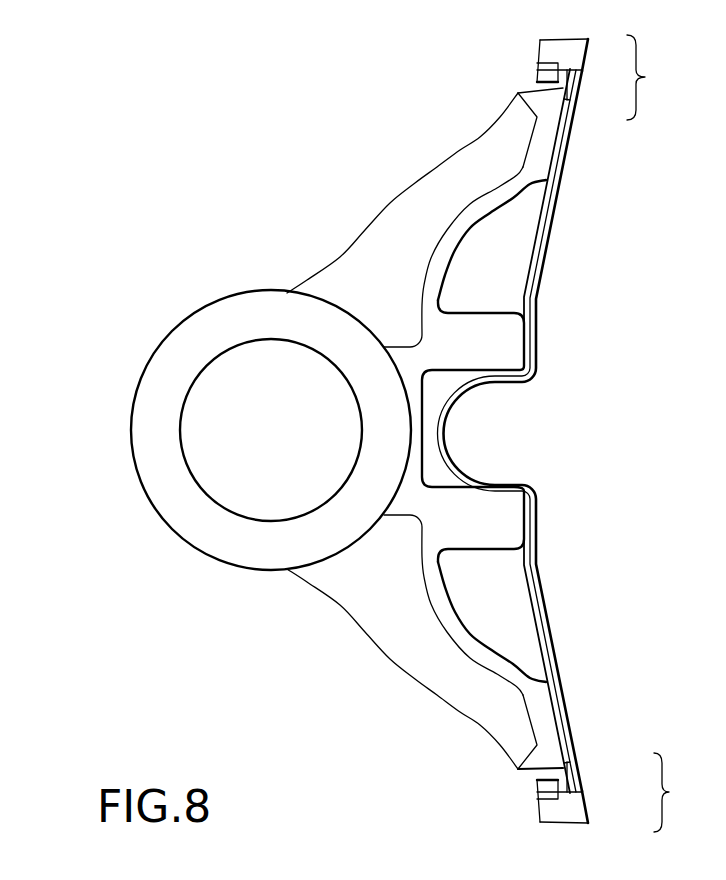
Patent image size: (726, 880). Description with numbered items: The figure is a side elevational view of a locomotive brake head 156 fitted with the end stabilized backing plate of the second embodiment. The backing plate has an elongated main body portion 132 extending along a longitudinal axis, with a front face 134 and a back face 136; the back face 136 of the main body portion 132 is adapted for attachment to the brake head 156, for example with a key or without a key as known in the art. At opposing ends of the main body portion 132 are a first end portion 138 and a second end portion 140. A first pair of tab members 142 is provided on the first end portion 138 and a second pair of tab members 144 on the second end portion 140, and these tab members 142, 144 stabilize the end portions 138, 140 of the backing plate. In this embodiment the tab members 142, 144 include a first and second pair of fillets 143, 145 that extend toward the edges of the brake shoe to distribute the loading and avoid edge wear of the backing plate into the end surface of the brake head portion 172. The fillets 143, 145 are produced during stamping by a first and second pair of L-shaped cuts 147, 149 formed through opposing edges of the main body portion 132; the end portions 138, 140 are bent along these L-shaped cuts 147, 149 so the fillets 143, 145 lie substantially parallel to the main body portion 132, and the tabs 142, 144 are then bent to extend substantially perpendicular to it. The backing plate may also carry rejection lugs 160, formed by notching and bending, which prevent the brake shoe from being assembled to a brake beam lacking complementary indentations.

The elongated main body portion 132 is at (540, 242).
The front face 134 is at (542, 283).
The back face 136 is at (535, 265).
The first end portion 138 is at (658, 77).
The second end portion 140 is at (685, 792).
The first pair of tab members 142 is at (552, 50).
The first pair of fillets 143 is at (543, 75).
The second pair of tab members 144 is at (553, 805).
The second pair of fillets 145 is at (545, 783).
The first pair of L-shaped cuts 147 is at (573, 90).
The second pair of L-shaped cuts 149 is at (566, 766).
The brake head 156 is at (437, 177).
The rejection lugs 160 is at (533, 192).
The brake head portion 172 is at (532, 97).